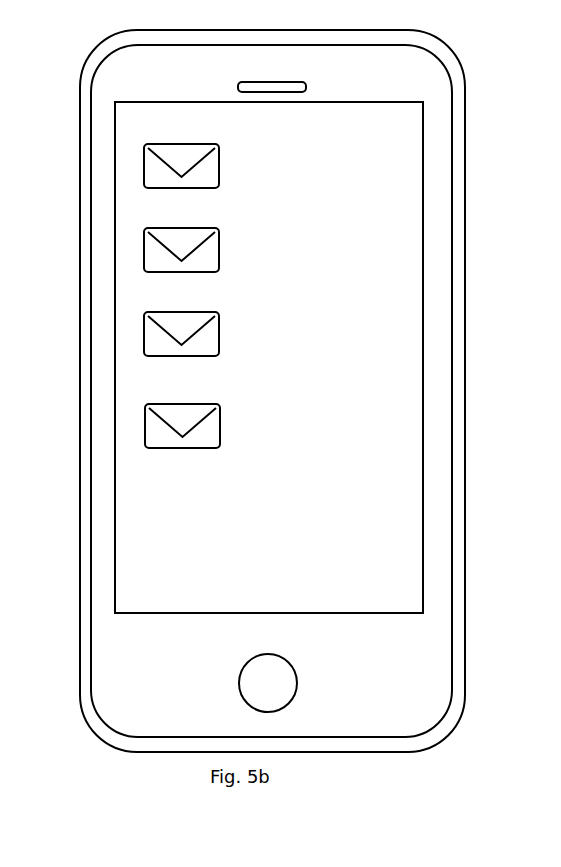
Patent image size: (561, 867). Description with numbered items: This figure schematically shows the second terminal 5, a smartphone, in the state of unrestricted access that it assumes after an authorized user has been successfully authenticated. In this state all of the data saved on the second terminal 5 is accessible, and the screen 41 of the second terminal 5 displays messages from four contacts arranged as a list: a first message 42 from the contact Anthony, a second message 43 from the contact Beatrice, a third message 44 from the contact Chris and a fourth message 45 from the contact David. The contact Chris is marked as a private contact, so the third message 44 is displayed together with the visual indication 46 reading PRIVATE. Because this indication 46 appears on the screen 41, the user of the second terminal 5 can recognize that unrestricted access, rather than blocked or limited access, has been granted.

The second terminal 5 is at (465, 131).
The screen 41 is at (373, 541).
The first message 42 is at (367, 168).
The second message 43 is at (367, 253).
The third message 44 is at (347, 321).
The fourth message 45 is at (368, 427).
The visual indication 46 is at (361, 347).